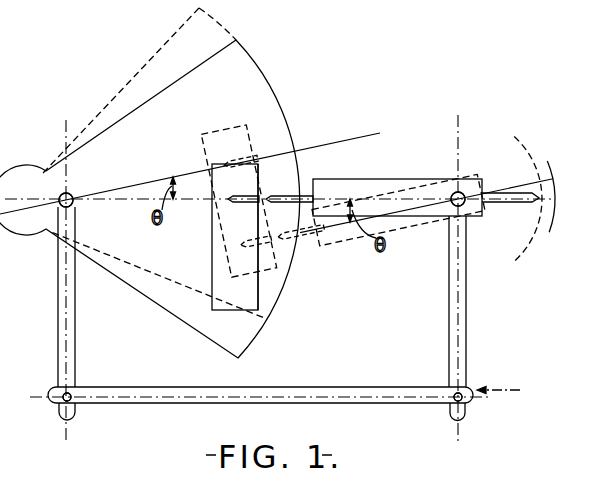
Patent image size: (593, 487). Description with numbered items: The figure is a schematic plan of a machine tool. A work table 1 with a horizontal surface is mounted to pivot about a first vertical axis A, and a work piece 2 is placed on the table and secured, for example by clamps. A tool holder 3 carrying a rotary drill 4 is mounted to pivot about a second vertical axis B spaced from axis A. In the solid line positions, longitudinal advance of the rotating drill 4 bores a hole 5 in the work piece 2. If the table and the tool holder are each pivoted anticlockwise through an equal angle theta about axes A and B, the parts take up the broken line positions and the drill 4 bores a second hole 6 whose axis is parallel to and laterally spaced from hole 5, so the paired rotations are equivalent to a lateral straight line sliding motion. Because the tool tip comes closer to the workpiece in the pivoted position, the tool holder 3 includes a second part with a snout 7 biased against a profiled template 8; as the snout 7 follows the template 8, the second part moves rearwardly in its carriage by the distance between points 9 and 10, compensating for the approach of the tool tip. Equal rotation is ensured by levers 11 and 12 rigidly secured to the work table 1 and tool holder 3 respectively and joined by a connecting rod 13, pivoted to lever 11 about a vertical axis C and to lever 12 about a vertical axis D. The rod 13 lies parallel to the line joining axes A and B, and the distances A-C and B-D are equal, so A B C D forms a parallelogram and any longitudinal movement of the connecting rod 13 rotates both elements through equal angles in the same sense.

The work table 1 is at (156, 304).
The work piece 2 is at (261, 294).
The tool holder 3 is at (370, 179).
The rotary drill 4 is at (290, 191).
The hole 5 is at (233, 208).
The hole 6 is at (270, 250).
The snout 7 is at (531, 205).
The profiled template 8 is at (543, 228).
The point 9 is at (540, 180).
The point 10 is at (553, 203).
The lever 11 is at (64, 298).
The lever 12 is at (467, 330).
The connecting rod 13 is at (240, 403).
The first vertical axis A is at (60, 207).
The second vertical axis B is at (464, 192).
The vertical axis C is at (71, 402).
The vertical axis D is at (462, 401).